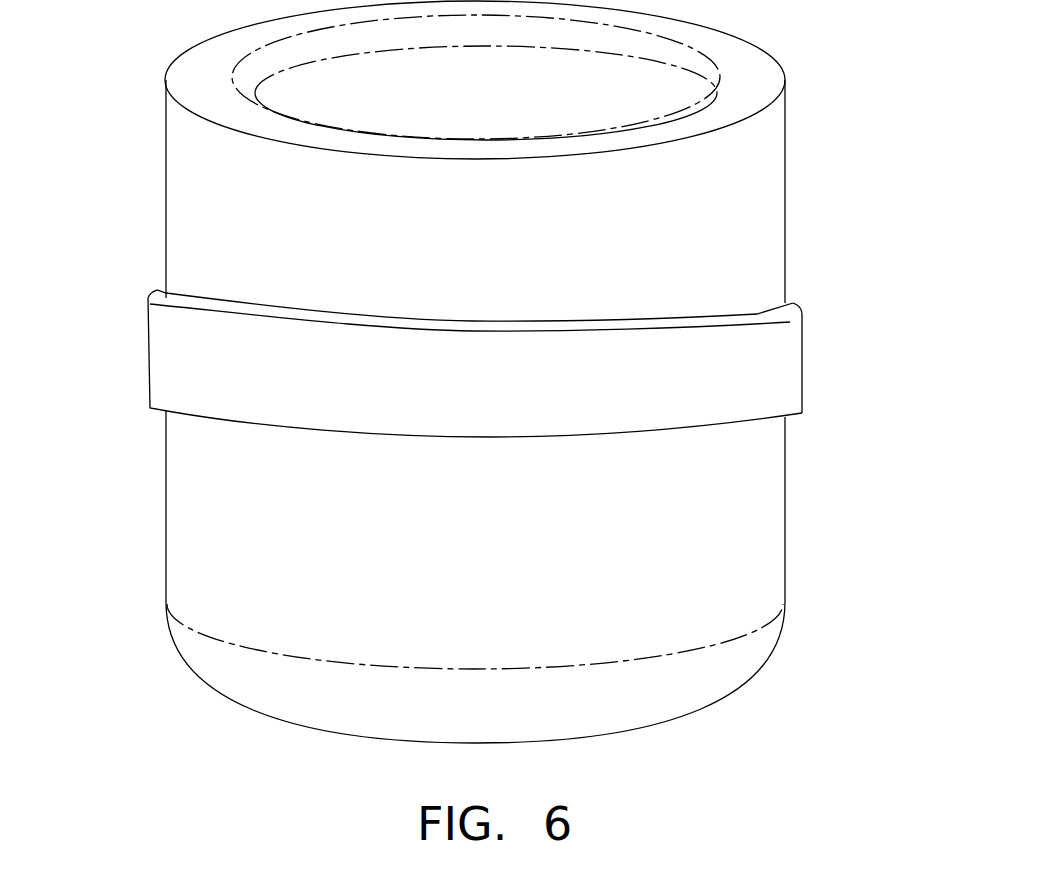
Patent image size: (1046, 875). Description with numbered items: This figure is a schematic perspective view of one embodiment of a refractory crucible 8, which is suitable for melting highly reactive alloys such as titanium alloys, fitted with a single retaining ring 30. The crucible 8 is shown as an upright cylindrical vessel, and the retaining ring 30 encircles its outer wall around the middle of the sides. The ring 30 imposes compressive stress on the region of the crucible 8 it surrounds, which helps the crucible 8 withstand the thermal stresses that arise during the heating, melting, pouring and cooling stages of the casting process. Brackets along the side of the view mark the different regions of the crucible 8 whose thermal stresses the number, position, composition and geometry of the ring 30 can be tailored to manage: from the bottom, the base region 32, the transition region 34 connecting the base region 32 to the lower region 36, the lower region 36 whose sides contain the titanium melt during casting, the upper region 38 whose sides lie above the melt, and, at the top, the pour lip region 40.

The refractory crucible 8 is at (466, 372).
The retaining ring 30 is at (767, 383).
The base region 32 is at (120, 625).
The transition region 34 is at (120, 552).
The lower region 36 is at (120, 298).
The upper region 38 is at (120, 165).
The pour lip region 40 is at (120, 55).